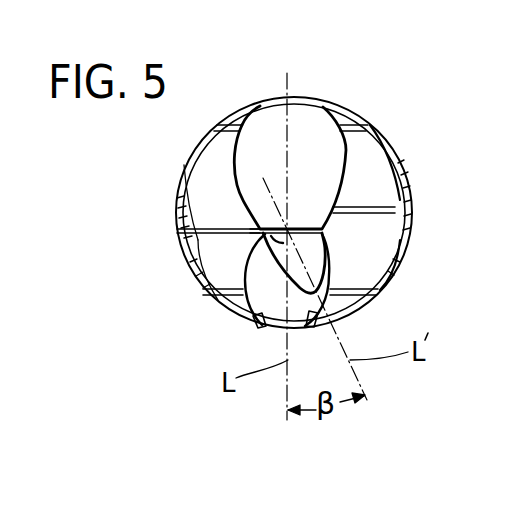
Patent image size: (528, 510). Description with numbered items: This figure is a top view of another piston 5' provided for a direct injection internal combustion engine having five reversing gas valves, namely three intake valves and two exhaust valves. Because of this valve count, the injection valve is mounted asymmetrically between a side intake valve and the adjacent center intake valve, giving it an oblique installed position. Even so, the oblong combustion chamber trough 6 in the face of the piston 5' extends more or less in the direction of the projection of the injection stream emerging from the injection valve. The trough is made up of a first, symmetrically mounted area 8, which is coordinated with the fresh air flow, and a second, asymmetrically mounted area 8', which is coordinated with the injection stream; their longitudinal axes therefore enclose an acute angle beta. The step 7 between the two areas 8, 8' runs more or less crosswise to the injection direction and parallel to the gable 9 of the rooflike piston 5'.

The piston 5' is at (273, 247).
The combustion chamber trough 6 is at (260, 133).
The step 7 is at (275, 238).
The first area 8 is at (387, 150).
The second area 8' is at (397, 266).
The gable 9 is at (222, 211).